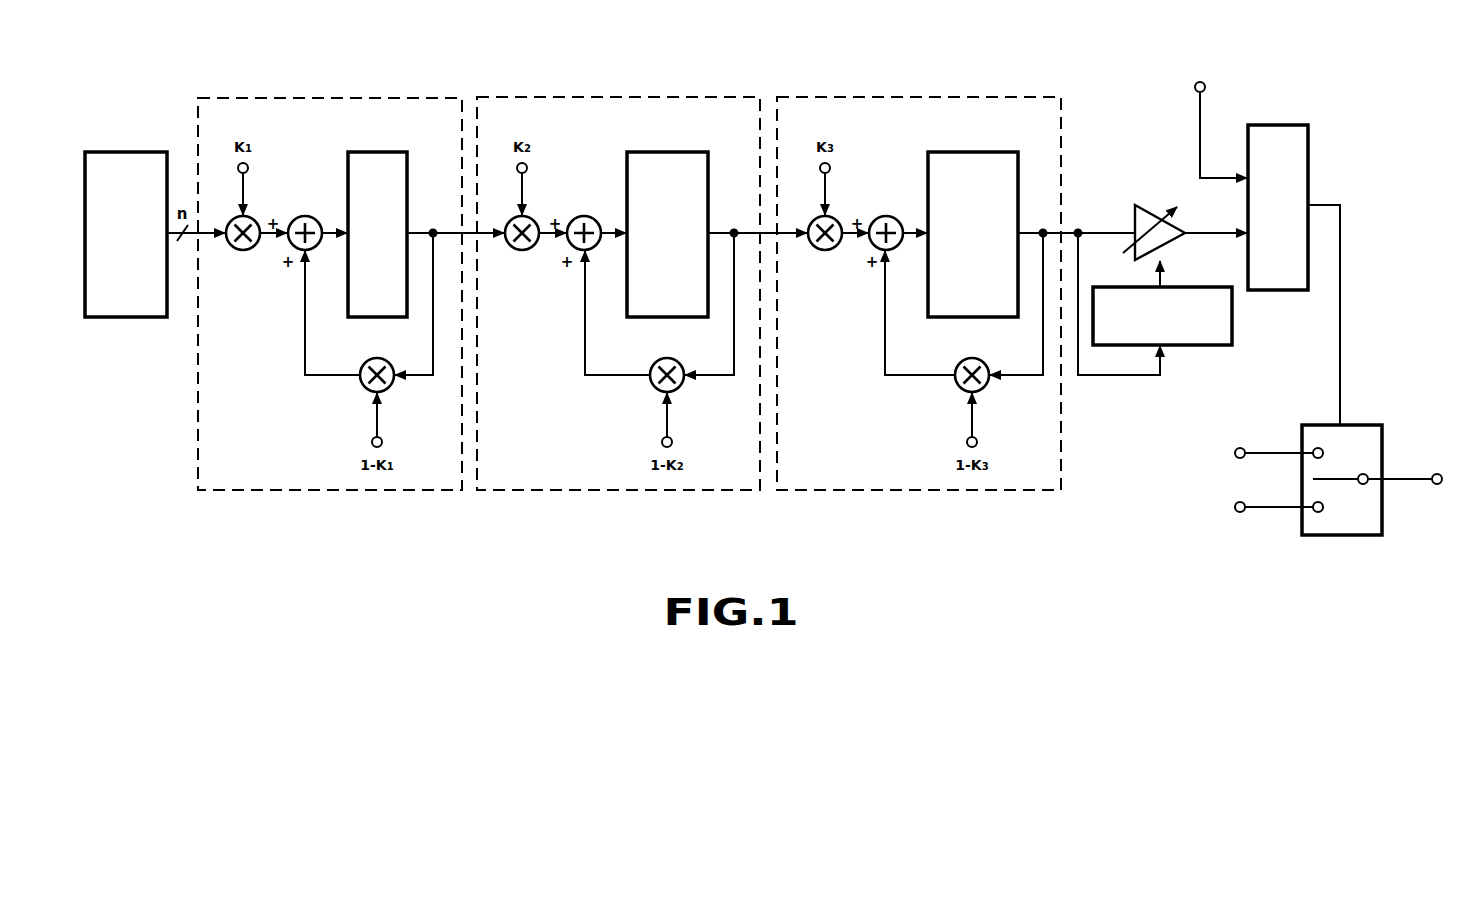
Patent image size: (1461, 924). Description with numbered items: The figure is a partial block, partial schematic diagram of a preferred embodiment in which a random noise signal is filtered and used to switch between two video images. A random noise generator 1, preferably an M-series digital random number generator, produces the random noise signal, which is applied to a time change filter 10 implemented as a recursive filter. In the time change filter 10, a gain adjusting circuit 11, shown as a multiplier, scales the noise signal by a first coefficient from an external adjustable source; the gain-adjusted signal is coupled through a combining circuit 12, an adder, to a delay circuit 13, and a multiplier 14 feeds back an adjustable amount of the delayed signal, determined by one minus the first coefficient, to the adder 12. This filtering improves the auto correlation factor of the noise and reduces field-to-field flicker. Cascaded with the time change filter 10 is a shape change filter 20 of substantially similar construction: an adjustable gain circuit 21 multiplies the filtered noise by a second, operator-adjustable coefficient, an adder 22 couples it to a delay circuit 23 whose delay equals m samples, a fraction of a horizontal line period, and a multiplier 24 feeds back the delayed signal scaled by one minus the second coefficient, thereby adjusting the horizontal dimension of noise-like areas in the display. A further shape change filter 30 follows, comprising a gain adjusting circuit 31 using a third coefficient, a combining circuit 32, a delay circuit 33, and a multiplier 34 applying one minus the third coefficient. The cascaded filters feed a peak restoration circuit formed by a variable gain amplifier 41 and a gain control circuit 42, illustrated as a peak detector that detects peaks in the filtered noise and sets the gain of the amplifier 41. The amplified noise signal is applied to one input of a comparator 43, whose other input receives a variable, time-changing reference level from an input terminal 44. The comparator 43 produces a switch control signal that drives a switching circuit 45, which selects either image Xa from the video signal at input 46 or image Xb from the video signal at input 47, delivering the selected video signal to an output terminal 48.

The random noise generator 1 is at (145, 152).
The time change filter 10 is at (405, 98).
The gain adjusting circuit 11 is at (243, 250).
The combining circuit 12 is at (305, 216).
The delay circuit 13 is at (377, 152).
The multiplier 14 is at (367, 386).
The shape change filter 20 is at (704, 97).
The adjustable gain circuit 21 is at (522, 250).
The adder 22 is at (584, 216).
The delay circuit 23 is at (667, 152).
The multiplier 24 is at (657, 386).
The shape change filter 30 is at (998, 97).
The gain adjusting circuit 31 is at (825, 250).
The combining circuit 32 is at (886, 216).
The delay circuit 33 is at (974, 152).
The multiplier 34 is at (962, 386).
The variable gain amplifier 41 is at (1153, 218).
The gain control circuit 42 is at (1232, 327).
The comparator 43 is at (1300, 125).
The input terminal 44 is at (1205, 88).
The switching circuit 45 is at (1340, 535).
The input 46 is at (1240, 448).
The input 47 is at (1240, 512).
The output terminal 48 is at (1436, 474).